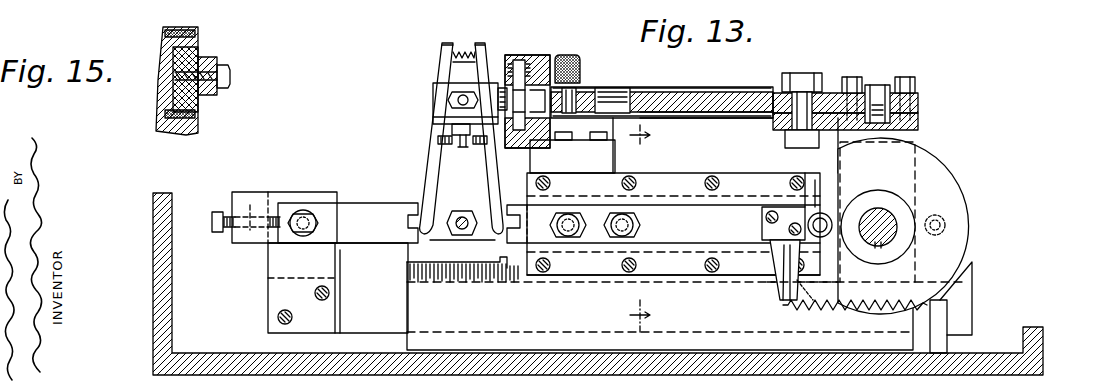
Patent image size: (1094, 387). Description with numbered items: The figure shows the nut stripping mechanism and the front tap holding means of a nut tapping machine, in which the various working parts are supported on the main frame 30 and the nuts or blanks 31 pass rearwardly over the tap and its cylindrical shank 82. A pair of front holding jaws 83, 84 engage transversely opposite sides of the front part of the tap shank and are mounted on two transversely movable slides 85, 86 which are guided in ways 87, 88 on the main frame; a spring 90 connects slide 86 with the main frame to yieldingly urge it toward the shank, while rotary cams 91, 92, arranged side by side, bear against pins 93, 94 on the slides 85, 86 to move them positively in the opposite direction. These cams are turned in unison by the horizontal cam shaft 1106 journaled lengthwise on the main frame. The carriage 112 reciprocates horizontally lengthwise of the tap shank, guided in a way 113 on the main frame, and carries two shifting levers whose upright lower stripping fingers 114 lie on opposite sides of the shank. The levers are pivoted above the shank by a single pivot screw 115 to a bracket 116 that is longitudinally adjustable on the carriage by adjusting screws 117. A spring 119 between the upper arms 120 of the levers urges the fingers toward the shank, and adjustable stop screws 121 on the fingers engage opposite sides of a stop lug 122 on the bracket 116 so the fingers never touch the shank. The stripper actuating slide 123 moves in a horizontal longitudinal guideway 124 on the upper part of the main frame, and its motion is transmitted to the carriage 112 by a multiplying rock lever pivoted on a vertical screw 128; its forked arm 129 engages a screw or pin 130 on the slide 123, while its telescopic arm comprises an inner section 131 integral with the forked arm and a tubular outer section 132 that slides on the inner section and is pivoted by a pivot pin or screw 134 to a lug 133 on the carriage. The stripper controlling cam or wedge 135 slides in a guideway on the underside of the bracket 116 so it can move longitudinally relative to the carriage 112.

In FIG. 15, the main frame 30 is at (165, 121).
In FIG. 13, the main frame 30 is at (158, 370).
In FIG. 13, the nuts or blanks 31 is at (455, 238).
In FIG. 13, the shank 82 is at (476, 200).
In FIG. 13, the front holding jaw 83 is at (348, 223).
In FIG. 15, the front holding jaw 84 is at (211, 96).
In FIG. 13, the front holding jaw 84 is at (663, 224).
In FIG. 13, the transversely movable slide 85 is at (310, 262).
In FIG. 15, the transversely movable slide 86 is at (218, 60).
In FIG. 13, the transversely movable slide 86 is at (682, 196).
In FIG. 13, the way 87 is at (448, 330).
In FIG. 15, the way 88 is at (198, 49).
In FIG. 13, the way 88 is at (668, 255).
In FIG. 13, the spring 90 is at (790, 313).
In FIG. 13, the rotary cam 91 is at (812, 176).
In FIG. 13, the rotary cam 92 is at (935, 170).
In FIG. 13, the pin 93 is at (948, 225).
In FIG. 13, the pin 94 is at (822, 213).
In FIG. 13, the cam shaft 1106 is at (880, 223).
In FIG. 13, the carriage 112 is at (532, 48).
In FIG. 13, the way 113 is at (565, 55).
In FIG. 13, the stripping fingers 114 is at (492, 192).
In FIG. 13, the pivot screw 115 is at (450, 101).
In FIG. 13, the bracket 116 is at (433, 90).
In FIG. 13, the adjusting screws 117 is at (500, 92).
In FIG. 13, the spring 119 is at (462, 50).
In FIG. 13, the upper arms 120 is at (447, 44).
In FIG. 13, the adjustable stop screws 121 is at (437, 141).
In FIG. 13, the stop lug 122 is at (463, 149).
In FIG. 13, the stripper actuating slide 123 is at (918, 103).
In FIG. 13, the guideway 124 is at (918, 125).
In FIG. 13, the vertical screw 128 is at (802, 72).
In FIG. 13, the forked arm 129 is at (850, 77).
In FIG. 13, the screw or pin 130 is at (878, 85).
In FIG. 13, the inner section 131 is at (748, 119).
In FIG. 13, the tubular outer section 132 is at (670, 119).
In FIG. 13, the lug 133 is at (600, 88).
In FIG. 13, the pivot pin or screw 134 is at (574, 89).
In FIG. 13, the stripper controlling cam or wedge 135 is at (452, 129).